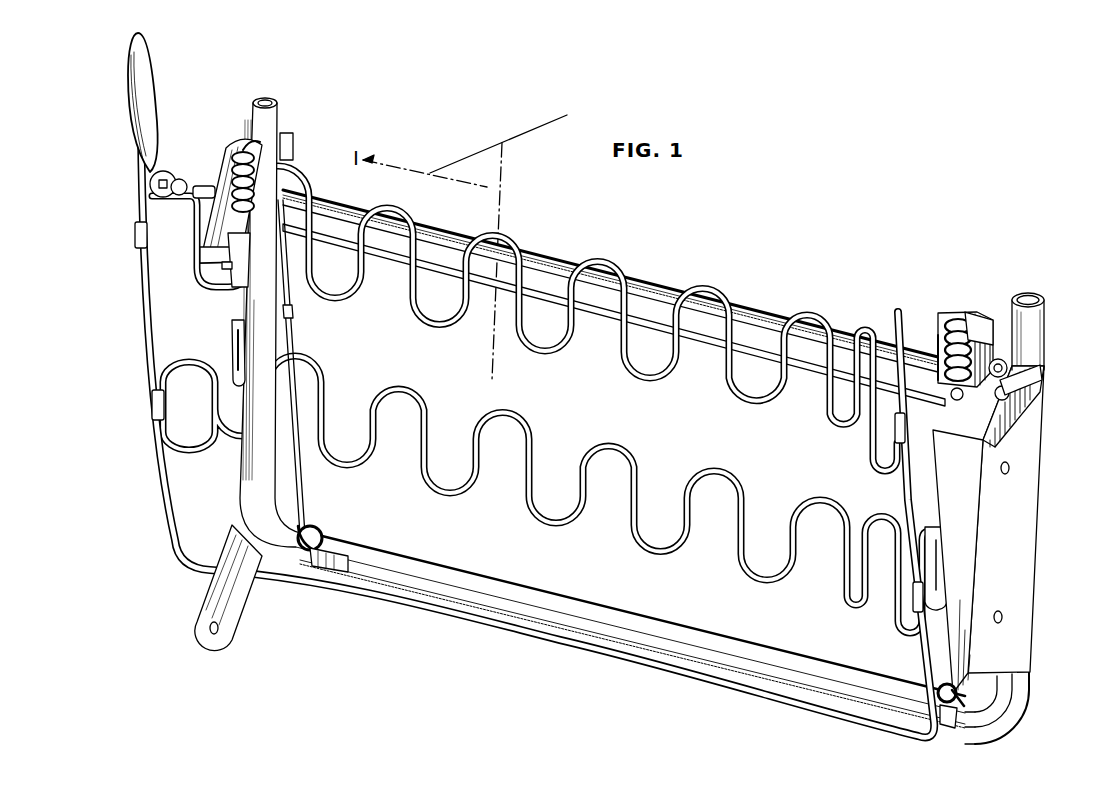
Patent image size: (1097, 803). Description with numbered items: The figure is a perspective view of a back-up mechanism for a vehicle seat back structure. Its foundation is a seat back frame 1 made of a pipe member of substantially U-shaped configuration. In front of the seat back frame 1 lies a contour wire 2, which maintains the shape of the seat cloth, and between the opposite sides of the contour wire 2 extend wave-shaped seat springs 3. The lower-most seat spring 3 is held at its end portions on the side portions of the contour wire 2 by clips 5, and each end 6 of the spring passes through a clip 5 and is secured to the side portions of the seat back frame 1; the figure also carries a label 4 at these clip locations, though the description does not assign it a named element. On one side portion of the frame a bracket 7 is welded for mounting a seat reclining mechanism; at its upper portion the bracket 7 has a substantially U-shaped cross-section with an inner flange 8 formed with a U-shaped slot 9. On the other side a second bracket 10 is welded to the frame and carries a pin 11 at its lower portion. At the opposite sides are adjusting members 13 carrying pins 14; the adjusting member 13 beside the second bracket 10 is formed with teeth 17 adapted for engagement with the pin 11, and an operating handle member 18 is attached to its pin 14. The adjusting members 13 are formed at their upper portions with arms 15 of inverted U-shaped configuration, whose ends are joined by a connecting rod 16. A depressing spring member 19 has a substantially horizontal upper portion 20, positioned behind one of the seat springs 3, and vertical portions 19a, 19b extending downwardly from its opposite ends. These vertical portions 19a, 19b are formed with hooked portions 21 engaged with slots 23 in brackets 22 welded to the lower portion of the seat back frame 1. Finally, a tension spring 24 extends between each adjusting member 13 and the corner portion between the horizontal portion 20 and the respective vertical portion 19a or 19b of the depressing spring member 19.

The seat back frame 1 is at (400, 580).
The contour wire 2 is at (186, 560).
The seat springs 3 is at (605, 285).
The connecting rod 4 is at (126, 250).
The clips 5 is at (138, 228).
The end of the spring 6 is at (230, 340).
The bracket 7 is at (1020, 508).
The inner flange 8 is at (1013, 345).
The U-shaped slot 9 is at (975, 312).
The second bracket 10 is at (218, 272).
The pin 11 is at (228, 270).
The adjusting member 13 is at (152, 183).
The pin 14 is at (222, 165).
The arm 15 is at (242, 150).
The connecting rod 16 is at (565, 260).
The teeth 17 is at (200, 258).
The operating handle member 18 is at (127, 92).
The depressing spring member 19 is at (292, 337).
The vertical portion 19a is at (290, 312).
The vertical portion 19b is at (935, 492).
The horizontal upper portion 20 is at (660, 330).
The hooked portions 21 is at (322, 530).
The brackets 22 is at (318, 574).
The slots 23 is at (328, 542).
The tension spring 24 is at (285, 140).